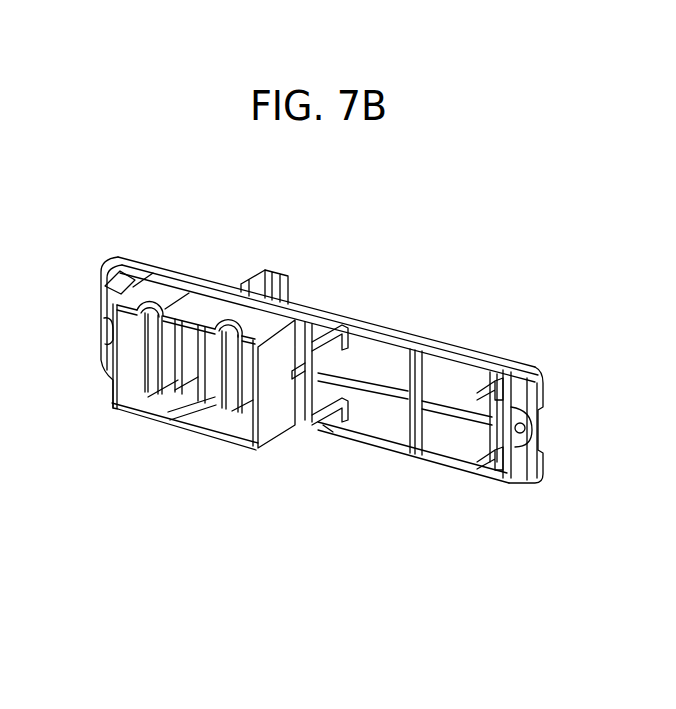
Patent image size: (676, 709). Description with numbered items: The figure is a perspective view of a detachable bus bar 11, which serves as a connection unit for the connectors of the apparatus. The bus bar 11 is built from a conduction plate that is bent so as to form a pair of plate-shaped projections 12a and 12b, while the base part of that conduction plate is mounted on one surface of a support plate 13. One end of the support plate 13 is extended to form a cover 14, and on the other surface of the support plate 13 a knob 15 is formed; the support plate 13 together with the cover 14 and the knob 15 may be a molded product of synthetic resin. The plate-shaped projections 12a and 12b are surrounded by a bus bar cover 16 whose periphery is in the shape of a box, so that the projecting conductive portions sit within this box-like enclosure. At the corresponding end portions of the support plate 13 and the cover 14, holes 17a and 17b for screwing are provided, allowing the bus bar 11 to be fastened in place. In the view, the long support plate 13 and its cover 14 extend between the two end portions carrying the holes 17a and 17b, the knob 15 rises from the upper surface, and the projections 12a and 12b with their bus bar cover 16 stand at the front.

The bus bar 11 is at (329, 164).
The plate-shaped projection 12a is at (228, 412).
The plate-shaped projection 12b is at (142, 413).
The support plate 13 is at (170, 268).
The cover 14 is at (430, 338).
The knob 15 is at (275, 270).
The bus bar cover 16 is at (283, 420).
The hole for screwing 17a is at (512, 480).
The hole for screwing 17b is at (100, 360).